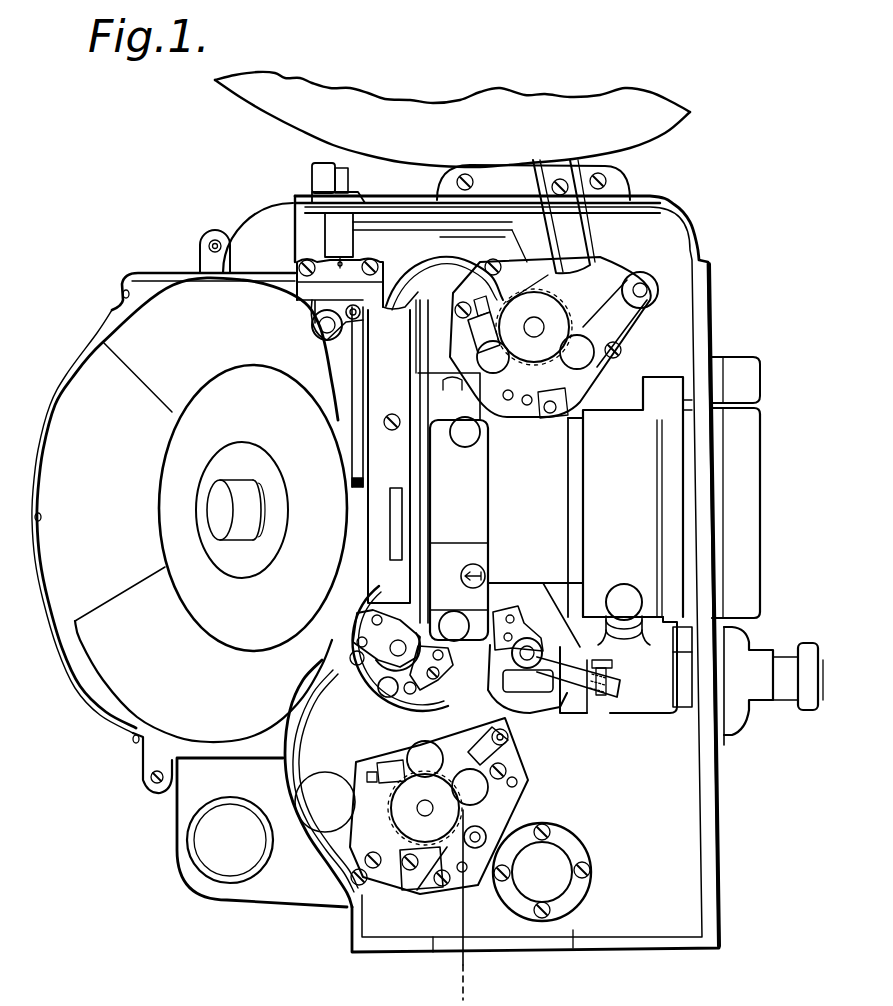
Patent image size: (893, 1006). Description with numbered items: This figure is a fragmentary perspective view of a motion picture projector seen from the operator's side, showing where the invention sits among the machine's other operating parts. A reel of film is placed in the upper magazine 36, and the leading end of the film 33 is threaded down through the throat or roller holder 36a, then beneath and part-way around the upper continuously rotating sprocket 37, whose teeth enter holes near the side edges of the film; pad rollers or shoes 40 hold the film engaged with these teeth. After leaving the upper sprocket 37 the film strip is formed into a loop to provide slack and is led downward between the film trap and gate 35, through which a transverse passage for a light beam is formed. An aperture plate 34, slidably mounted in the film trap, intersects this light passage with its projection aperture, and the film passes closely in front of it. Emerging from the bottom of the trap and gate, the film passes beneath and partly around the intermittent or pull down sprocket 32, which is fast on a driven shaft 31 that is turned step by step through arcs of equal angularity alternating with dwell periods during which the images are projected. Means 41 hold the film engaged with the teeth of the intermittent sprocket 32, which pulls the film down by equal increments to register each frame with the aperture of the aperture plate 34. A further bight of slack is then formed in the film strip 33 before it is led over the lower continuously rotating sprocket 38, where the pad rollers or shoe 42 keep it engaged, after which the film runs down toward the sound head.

The driven shaft 31 is at (400, 648).
The intermittent or pull down sprocket 32 is at (404, 618).
The film 33 is at (455, 263).
The aperture plate 34 is at (403, 516).
The film trap and gate 35 is at (425, 487).
The upper magazine 36 is at (530, 102).
The throat or roller holder 36a is at (584, 237).
The upper continuously rotating sprocket 37 is at (553, 308).
The lower continuously rotating sprocket 38 is at (407, 825).
The pad rollers or shoes 40 is at (584, 360).
The means for holding film engaged 41 is at (436, 676).
The pad rollers or shoe 42 is at (482, 795).